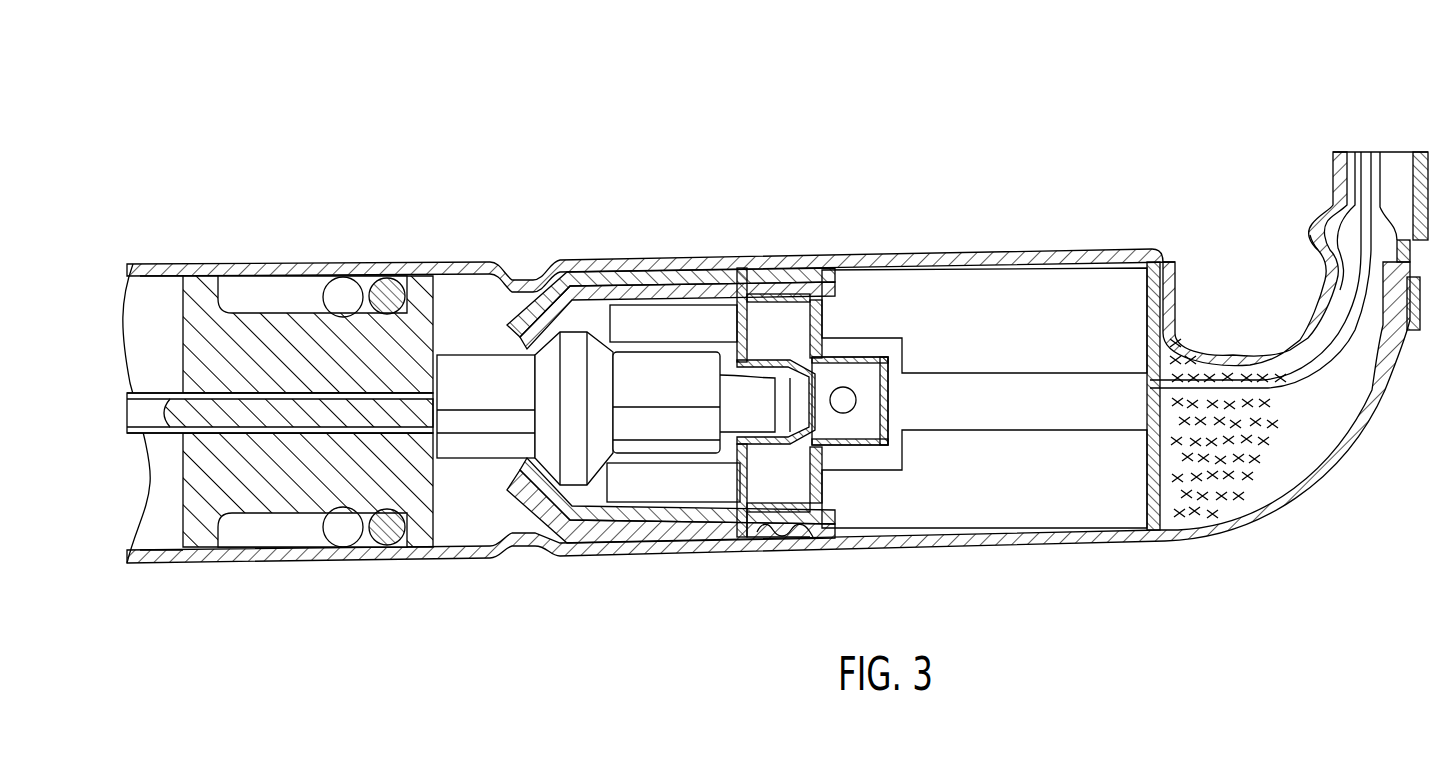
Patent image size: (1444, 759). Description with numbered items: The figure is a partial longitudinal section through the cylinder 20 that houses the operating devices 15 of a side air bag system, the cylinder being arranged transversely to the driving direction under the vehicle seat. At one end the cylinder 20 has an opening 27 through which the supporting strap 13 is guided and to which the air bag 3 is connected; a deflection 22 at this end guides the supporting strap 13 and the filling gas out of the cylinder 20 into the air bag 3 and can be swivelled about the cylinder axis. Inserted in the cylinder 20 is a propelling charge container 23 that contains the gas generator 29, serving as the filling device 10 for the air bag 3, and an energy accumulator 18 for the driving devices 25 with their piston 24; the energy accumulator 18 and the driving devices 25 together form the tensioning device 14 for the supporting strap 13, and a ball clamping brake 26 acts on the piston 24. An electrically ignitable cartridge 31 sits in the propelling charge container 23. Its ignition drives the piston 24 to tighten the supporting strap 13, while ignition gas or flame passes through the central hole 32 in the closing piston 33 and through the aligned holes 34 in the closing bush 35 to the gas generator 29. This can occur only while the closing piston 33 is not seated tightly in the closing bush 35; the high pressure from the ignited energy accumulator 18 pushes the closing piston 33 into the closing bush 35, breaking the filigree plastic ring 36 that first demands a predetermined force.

The air bag 3 is at (1332, 157).
The filling device 10 is at (944, 242).
The supporting strap 13 is at (1267, 388).
The tensioning device 14 is at (616, 236).
The operating devices 15 is at (746, 110).
The energy accumulator 18 is at (492, 420).
The cylinder 20 is at (154, 268).
The deflection 22 is at (1196, 336).
The propelling charge container 23 is at (770, 517).
The piston 24 is at (202, 284).
The driving devices 25 is at (272, 520).
The ball clamping brake 26 is at (391, 283).
The opening 27 is at (1303, 237).
The gas generator 29 is at (1127, 276).
The cartridge 31 is at (457, 362).
The hole 32 is at (820, 393).
The closing piston 33 is at (828, 508).
The holes 34 is at (848, 398).
The closing bush 35 is at (903, 430).
The ring 36 is at (740, 490).